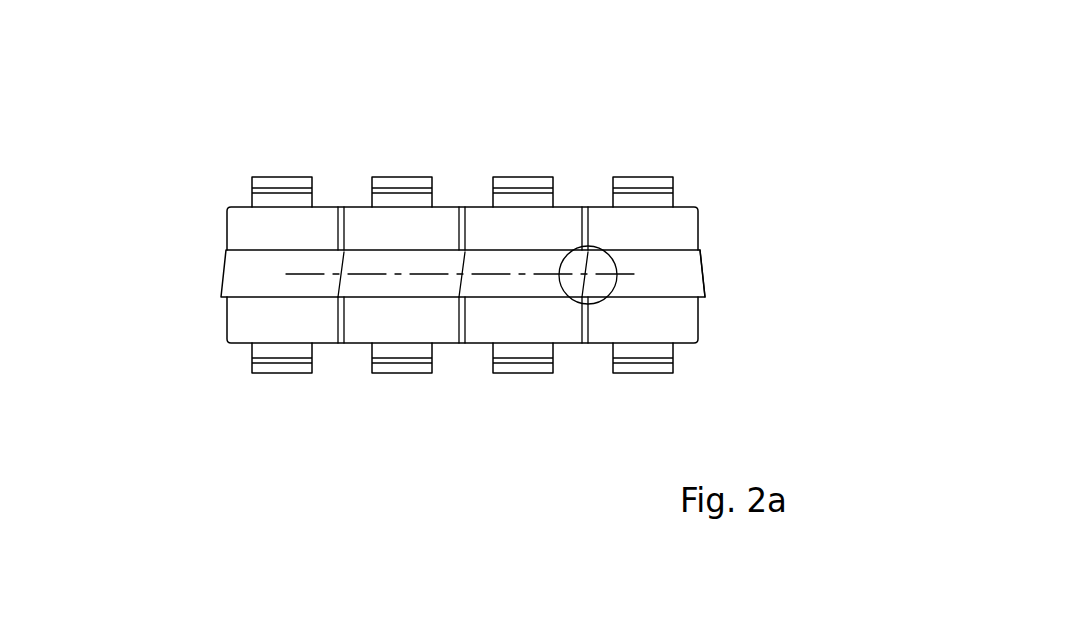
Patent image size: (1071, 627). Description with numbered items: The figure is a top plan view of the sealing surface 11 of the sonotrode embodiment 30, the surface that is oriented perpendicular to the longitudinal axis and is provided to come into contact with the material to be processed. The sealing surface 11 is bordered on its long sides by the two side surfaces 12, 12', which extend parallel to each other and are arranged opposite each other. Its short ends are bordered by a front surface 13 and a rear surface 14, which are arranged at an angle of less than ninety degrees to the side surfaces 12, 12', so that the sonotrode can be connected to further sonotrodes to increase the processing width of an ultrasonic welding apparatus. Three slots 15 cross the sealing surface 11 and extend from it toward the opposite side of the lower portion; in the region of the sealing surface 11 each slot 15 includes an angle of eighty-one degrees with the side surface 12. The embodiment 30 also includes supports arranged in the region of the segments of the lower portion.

The sealing surface 11 is at (505, 283).
The side surface 12 is at (463, 132).
The side surface 12' is at (463, 418).
The front surface 13 is at (227, 259).
The rear surface 14 is at (700, 278).
The slot 15 is at (340, 222).
The embodiment 30 is at (510, 187).